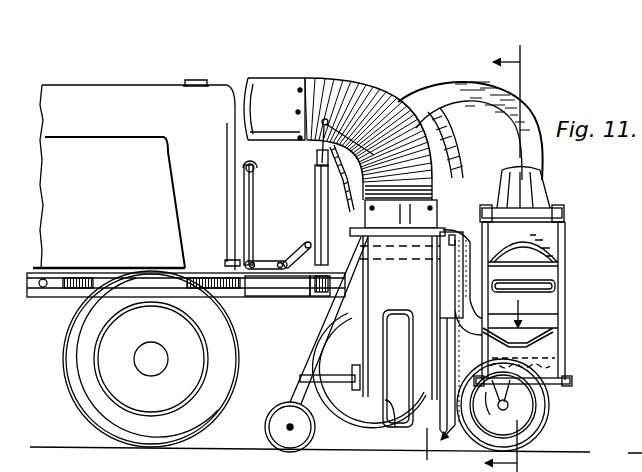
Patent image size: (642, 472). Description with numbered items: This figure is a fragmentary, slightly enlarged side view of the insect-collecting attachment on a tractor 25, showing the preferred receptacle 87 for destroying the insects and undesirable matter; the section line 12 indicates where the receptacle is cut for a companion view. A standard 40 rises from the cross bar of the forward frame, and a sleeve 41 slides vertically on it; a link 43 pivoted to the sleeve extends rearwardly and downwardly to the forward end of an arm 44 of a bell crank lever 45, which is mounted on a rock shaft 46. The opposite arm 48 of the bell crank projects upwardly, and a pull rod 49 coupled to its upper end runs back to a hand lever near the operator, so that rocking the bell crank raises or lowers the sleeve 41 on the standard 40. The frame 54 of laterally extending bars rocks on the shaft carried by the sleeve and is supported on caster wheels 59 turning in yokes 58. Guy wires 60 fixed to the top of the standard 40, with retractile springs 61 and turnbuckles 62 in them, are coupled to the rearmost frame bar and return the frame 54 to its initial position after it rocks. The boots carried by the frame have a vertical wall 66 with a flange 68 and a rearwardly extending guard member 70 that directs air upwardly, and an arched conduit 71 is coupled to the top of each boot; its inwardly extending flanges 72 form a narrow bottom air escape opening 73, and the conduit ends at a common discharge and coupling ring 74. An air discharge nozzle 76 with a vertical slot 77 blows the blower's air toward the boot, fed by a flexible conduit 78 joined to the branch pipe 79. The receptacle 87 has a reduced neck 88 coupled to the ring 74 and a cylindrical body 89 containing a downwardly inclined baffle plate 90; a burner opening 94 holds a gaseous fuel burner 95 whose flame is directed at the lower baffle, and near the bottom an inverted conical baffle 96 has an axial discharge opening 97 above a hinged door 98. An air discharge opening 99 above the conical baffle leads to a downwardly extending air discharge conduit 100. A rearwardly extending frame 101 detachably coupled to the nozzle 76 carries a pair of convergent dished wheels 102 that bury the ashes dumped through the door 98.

The section line 12- 12 is at (520, 258).
The tractor 25 is at (114, 90).
The standard 40 is at (316, 161).
The sleeve 41 is at (315, 194).
The link 43 is at (301, 249).
The arm 44 is at (270, 262).
The bell crank lever 45 is at (243, 212).
The rock shaft 46 is at (255, 275).
The arm 48 is at (250, 233).
The pull rod 49 is at (256, 168).
The frame 54 is at (458, 226).
The yoke 58 is at (503, 405).
The caster wheel 59 is at (548, 429).
The guy wires 60 is at (359, 142).
The retractile springs 61 is at (355, 173).
The turnbuckles 62 is at (363, 208).
The wall 66 is at (430, 450).
The flange 68 is at (450, 296).
The guard member 70 is at (328, 364).
The arched conduit 71 is at (470, 82).
The inwardly extending flanges 72 is at (437, 130).
The air escape opening 73 is at (440, 143).
The discharge and coupling ring 74 is at (548, 210).
The air discharge nozzle 76 is at (367, 400).
The air discharge slot 77 is at (393, 405).
The flexible conduit 78 is at (367, 96).
The branch pipe 79 is at (275, 88).
The receptacle 87 is at (568, 300).
The reduced neck 88 is at (565, 213).
The cylindrical body 89 is at (566, 318).
The baffle plate 90 is at (556, 252).
The burner opening 94 is at (509, 289).
The gaseous fuel burner 95 is at (560, 284).
The inverted conical baffle 96 is at (527, 337).
The axial discharge opening 97 is at (566, 356).
The hinged door 98 is at (550, 403).
The air discharge opening 99 is at (450, 311).
The air discharge conduit 100 is at (399, 368).
The rearwardly extending frame 101 is at (328, 322).
The dished wheels 102 is at (284, 410).